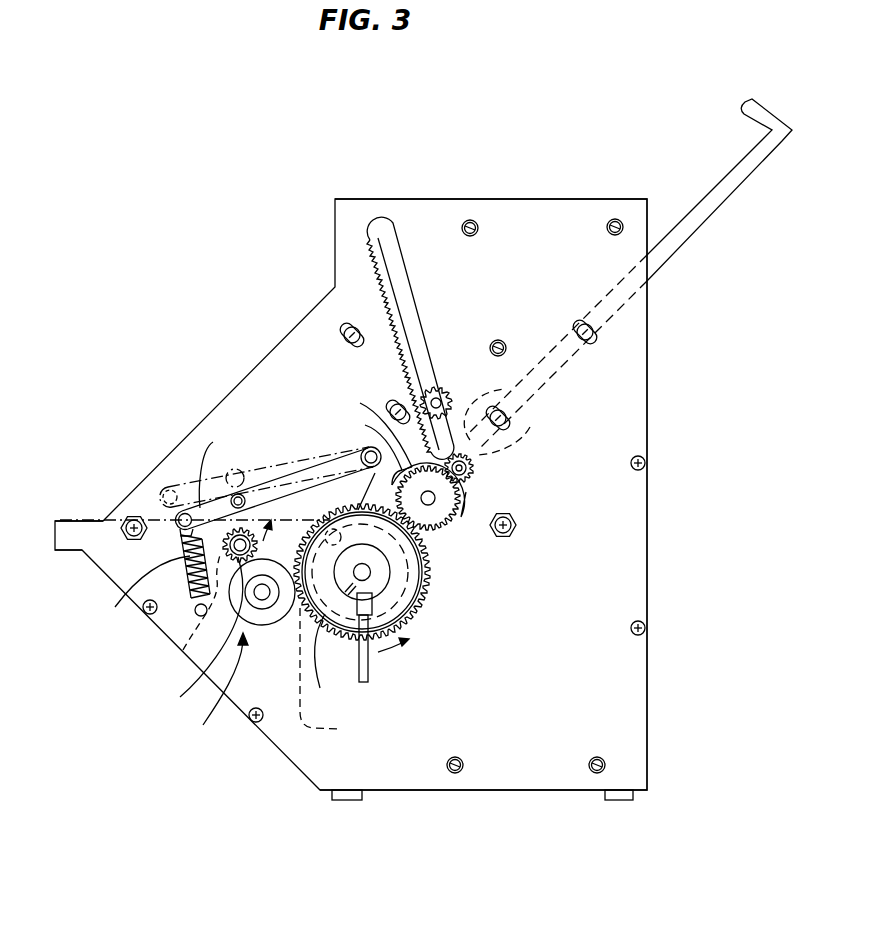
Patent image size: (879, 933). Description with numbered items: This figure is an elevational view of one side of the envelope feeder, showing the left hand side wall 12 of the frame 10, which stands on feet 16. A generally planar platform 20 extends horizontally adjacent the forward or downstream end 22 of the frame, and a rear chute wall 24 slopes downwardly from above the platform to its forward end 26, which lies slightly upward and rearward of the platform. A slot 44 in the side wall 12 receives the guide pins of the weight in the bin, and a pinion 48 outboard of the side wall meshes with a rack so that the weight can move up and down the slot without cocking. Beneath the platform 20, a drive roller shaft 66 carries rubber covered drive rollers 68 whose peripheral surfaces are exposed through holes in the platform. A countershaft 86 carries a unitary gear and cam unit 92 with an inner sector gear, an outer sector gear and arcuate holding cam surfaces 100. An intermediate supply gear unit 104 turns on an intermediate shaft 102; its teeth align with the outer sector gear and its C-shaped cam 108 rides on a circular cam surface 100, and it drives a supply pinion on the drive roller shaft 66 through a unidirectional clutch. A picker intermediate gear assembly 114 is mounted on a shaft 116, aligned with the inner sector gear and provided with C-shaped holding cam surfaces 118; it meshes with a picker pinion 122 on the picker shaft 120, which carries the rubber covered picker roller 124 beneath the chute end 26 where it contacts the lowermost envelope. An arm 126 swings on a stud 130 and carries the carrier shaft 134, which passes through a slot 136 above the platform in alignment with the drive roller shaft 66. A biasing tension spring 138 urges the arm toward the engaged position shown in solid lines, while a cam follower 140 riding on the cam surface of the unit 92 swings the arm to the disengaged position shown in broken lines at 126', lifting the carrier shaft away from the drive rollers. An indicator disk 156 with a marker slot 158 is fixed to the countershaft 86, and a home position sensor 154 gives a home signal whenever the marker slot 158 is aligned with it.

The frame 10 is at (516, 802).
The left hand side wall 12 is at (617, 672).
The feet 16 is at (350, 800).
The platform 20 is at (108, 509).
The forward end 22 is at (64, 560).
The rear chute wall 24 is at (700, 215).
The forward end of chute wall 26 is at (525, 393).
The slot 44 is at (408, 307).
The pinion 48 is at (442, 392).
The drive roller shaft 66 is at (201, 634).
The drive rollers 68 is at (183, 650).
The countershaft 86 is at (370, 573).
The gear and cam unit 92 is at (446, 572).
The holding cam surfaces 100 is at (327, 664).
The intermediate shaft 102 is at (262, 594).
The intermediate supply gear unit 104 is at (209, 686).
The C-shaped cam 108 is at (225, 612).
The picker intermediate gear assembly 114 is at (447, 500).
The shaft 116 is at (362, 404).
The C-shaped holding cam surfaces 118 is at (366, 426).
The picker shaft 120 is at (470, 477).
The picker pinion 122 is at (473, 462).
The picker roller 124 is at (528, 426).
The arm 126 is at (246, 461).
The disengaged position of arm 126' is at (237, 465).
The studs 130 is at (362, 450).
The carrier shaft 134 is at (221, 464).
The slots 136 is at (236, 470).
The biasing tension springs 138 is at (118, 606).
The cam follower 140 is at (338, 675).
The home position sensor 154 is at (372, 606).
The indicator disk 156 is at (380, 588).
The marker slot 158 is at (349, 594).